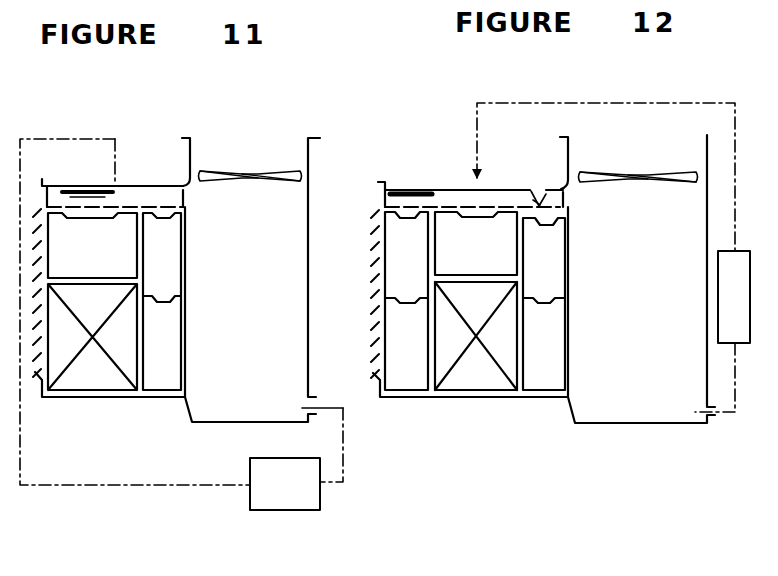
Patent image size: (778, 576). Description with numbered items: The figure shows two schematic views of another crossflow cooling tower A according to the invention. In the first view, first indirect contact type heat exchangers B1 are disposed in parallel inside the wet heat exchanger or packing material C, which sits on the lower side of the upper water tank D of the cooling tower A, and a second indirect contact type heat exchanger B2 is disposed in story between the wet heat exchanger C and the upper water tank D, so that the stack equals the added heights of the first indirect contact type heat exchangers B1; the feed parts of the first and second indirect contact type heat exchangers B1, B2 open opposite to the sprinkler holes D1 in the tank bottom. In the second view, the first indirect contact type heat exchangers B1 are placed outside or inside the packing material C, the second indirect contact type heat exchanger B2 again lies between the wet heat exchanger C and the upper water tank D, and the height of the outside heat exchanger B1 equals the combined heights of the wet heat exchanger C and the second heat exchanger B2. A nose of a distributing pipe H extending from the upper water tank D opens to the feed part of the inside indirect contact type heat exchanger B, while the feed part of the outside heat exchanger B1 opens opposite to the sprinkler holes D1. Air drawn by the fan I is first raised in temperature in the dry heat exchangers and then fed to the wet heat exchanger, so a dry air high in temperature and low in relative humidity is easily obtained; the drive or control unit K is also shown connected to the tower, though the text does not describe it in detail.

In FIG. 11, the cooling tower A is at (280, 156).
In FIG. 12, the cooling tower A is at (428, 180).
In FIG. 12, the indirect contact type heat exchanger B is at (532, 277).
In FIG. 11, the first indirect contact type heat exchanger B1 is at (155, 273).
In FIG. 12, the first indirect contact type heat exchanger B1 is at (395, 280).
In FIG. 11, the second indirect contact type heat exchanger B2 is at (90, 246).
In FIG. 12, the second indirect contact type heat exchanger B2 is at (478, 241).
In FIG. 11, the wet heat exchanger (packing material) C is at (57, 347).
In FIG. 12, the wet heat exchanger (packing material) C is at (470, 365).
In FIG. 11, the upper water tank D is at (62, 196).
In FIG. 12, the upper water tank D is at (400, 193).
In FIG. 11, the sprinkler holes D1 is at (163, 204).
In FIG. 12, the sprinkler holes D1 is at (467, 206).
In FIG. 12, the distributing pipe H is at (541, 205).
In FIG. 11, the fan I is at (220, 170).
In FIG. 11, the controller K is at (284, 510).
In FIG. 12, the controller K is at (732, 290).